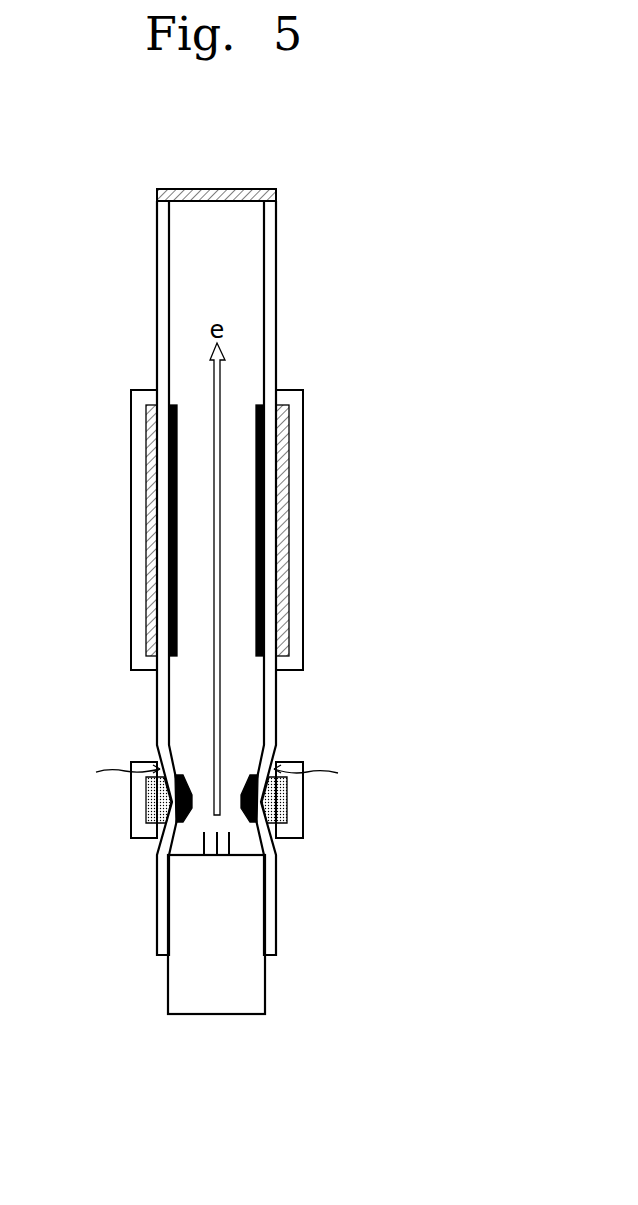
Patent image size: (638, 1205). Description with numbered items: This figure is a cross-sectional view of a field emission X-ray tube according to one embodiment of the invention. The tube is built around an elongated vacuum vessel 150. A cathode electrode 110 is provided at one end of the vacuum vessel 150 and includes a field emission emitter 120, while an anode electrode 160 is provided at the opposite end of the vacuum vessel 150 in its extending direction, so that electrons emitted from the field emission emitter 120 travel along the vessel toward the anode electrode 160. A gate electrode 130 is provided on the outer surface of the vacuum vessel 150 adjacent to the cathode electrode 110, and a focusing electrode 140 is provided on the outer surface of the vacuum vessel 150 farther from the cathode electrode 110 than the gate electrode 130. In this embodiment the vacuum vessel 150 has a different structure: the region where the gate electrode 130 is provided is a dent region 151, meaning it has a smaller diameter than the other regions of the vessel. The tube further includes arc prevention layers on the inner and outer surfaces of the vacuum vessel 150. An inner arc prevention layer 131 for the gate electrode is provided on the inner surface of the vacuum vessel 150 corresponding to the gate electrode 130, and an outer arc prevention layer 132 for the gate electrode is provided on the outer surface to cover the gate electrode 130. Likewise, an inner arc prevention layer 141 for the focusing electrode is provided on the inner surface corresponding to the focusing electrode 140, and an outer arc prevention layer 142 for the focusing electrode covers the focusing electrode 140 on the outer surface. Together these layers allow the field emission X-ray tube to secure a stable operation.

The cathode electrode 110 is at (266, 985).
The field emission emitter 120 is at (230, 846).
The gate electrode 130 is at (148, 800).
The inner arc prevention layer for a gate electrode 131 is at (178, 810).
The outer arc prevention layer for a gate electrode 132 is at (303, 817).
The focusing electrode 140 is at (146, 530).
The inner arc prevention layer for a focusing electrode 141 is at (265, 452).
The outer arc prevention layer for a focusing electrode 142 is at (303, 608).
The vacuum vessel 150 is at (277, 316).
The dent region 151 is at (218, 771).
The anode electrode 160 is at (277, 192).